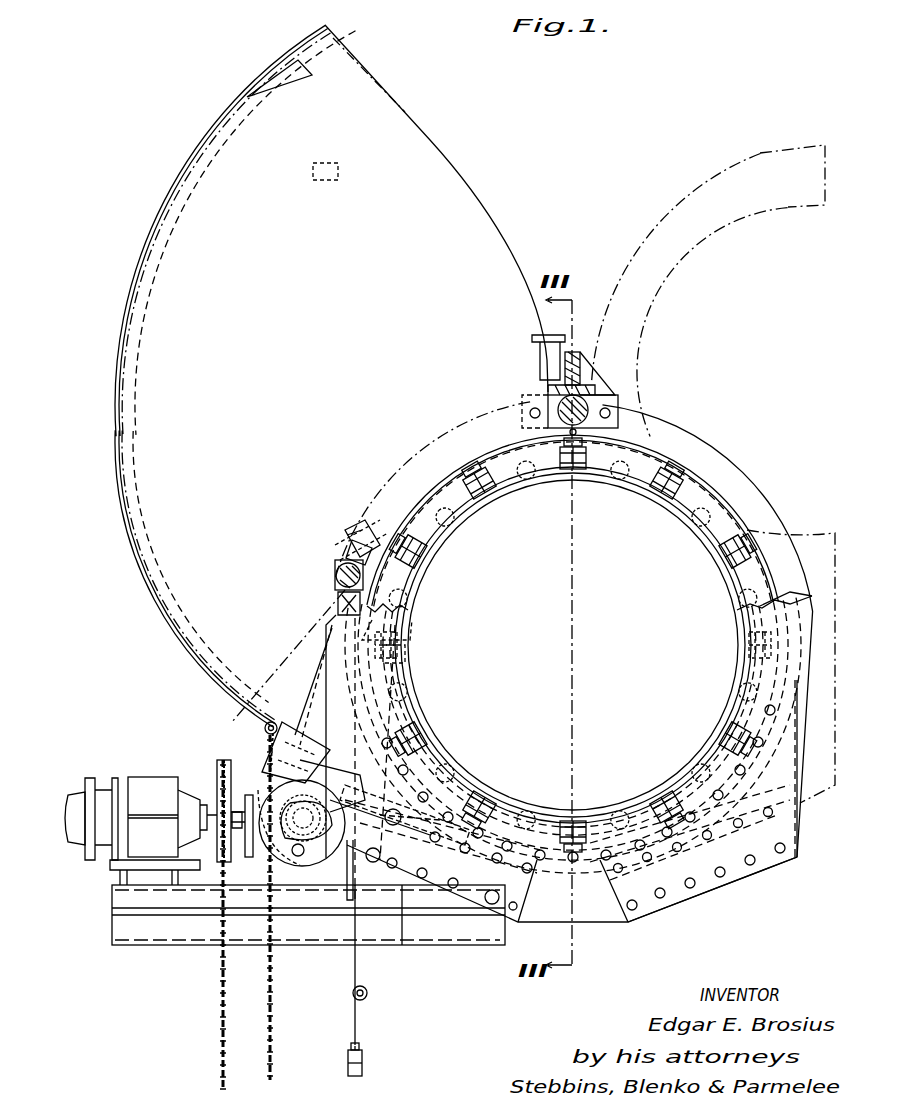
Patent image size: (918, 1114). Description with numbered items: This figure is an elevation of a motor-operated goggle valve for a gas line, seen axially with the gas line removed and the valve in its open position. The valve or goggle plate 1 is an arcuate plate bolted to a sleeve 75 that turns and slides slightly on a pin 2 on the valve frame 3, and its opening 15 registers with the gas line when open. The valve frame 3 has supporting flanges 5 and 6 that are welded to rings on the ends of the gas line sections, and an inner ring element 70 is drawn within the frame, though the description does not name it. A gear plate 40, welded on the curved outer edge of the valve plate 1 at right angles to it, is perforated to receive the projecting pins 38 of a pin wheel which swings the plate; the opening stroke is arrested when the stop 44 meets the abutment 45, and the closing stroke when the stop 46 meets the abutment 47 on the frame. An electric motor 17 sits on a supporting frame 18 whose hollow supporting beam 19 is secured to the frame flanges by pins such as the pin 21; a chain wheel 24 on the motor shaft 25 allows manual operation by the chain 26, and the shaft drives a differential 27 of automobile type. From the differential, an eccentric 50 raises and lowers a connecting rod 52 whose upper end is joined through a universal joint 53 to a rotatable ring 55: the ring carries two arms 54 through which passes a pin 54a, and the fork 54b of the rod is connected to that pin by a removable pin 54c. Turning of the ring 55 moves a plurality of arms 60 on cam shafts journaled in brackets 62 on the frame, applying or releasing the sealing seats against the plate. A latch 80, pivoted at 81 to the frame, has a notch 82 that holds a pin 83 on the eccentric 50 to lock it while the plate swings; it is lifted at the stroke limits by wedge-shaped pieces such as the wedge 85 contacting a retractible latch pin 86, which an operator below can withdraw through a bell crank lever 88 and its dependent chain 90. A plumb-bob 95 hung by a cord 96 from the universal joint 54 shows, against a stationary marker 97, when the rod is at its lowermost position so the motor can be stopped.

The valve or goggle plate 1 is at (125, 322).
The pin 2 is at (597, 400).
The valve frame 3 is at (730, 464).
The supporting flange 5 is at (782, 523).
The supporting flange 6 is at (795, 585).
The opening 15 is at (665, 222).
The electric motor 17 is at (138, 785).
The supporting frame 18 is at (122, 930).
The hollow supporting beam 19 is at (320, 930).
The pin 21 is at (373, 864).
The chain wheel 24 is at (218, 765).
The motor shaft 25 is at (208, 795).
The chain 26 is at (220, 998).
The differential 27 is at (256, 800).
The projecting pins 38 is at (362, 788).
The gear plate 40 is at (118, 432).
The stop 44 is at (799, 822).
The abutment 45 is at (798, 843).
The stop 46 is at (336, 163).
The abutment 47 is at (408, 670).
The eccentric 50 is at (275, 870).
The connecting rod 52 is at (320, 692).
The universal joint 53 is at (352, 548).
The plates or arms 54 is at (358, 540).
The pin 54a is at (345, 552).
The fork 54b is at (340, 587).
The pin 54c is at (336, 567).
The rotatable ring 55 is at (486, 458).
The arms 60 is at (458, 470).
The brackets 62 is at (488, 498).
The inner ring 70 is at (462, 528).
The sleeve 75 is at (545, 408).
The latch 80 is at (312, 728).
The pivot 81 is at (401, 820).
The notch 82 is at (348, 770).
The pin 83 is at (298, 857).
The wedge-shaped piece 85 is at (310, 78).
The retractible latch pin 86 is at (266, 718).
The bell crank lever 88 is at (265, 750).
The chain 90 is at (267, 978).
The plumb-bob 95 is at (346, 1058).
The cord 96 is at (358, 962).
The stationary marker 97 is at (382, 1066).